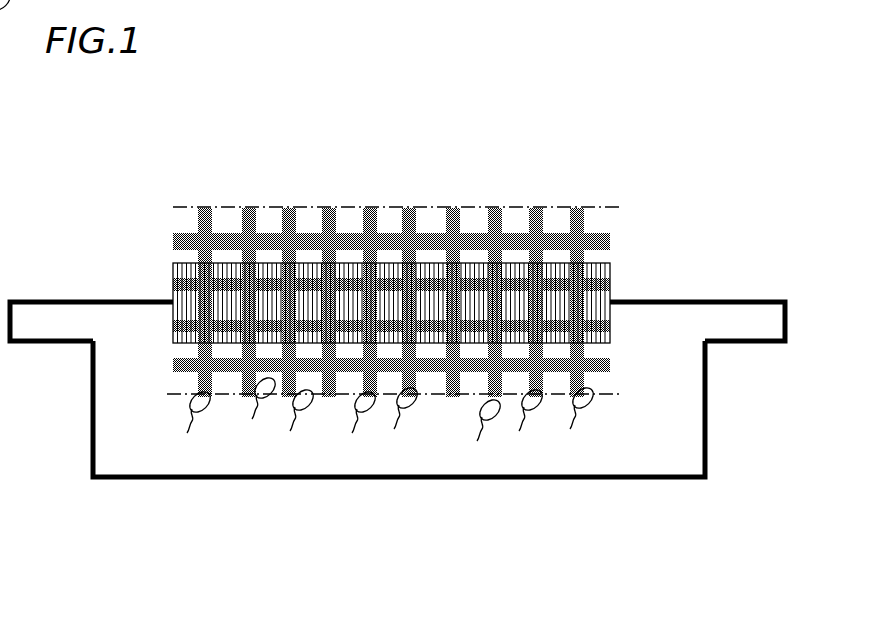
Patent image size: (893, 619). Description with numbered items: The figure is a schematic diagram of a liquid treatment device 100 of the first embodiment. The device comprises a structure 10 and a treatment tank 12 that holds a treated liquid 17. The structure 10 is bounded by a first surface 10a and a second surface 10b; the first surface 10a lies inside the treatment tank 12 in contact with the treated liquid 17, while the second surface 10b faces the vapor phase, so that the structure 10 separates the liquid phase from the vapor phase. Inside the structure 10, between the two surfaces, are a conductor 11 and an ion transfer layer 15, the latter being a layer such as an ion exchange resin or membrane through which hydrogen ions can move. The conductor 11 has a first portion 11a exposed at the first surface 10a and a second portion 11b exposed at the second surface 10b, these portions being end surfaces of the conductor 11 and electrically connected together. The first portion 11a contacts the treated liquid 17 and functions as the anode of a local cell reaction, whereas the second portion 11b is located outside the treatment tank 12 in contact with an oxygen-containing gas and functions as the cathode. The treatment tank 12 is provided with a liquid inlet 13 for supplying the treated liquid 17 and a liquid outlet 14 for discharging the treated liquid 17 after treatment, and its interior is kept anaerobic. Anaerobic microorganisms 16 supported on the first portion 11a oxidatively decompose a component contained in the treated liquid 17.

The liquid treatment device 100 is at (700, 120).
The structure 10 is at (603, 82).
The first surface 10a is at (230, 395).
The second surface 10b is at (217, 207).
The conductor 11 is at (430, 240).
The first portion 11a is at (455, 395).
The second portion 11b is at (327, 207).
The treatment tank 12 is at (572, 478).
The liquid inlet 13 is at (23, 300).
The liquid outlet 14 is at (770, 299).
The ion transfer layer 15 is at (477, 262).
The anaerobic microorganisms 16 is at (308, 408).
The treated liquid 17 is at (648, 453).